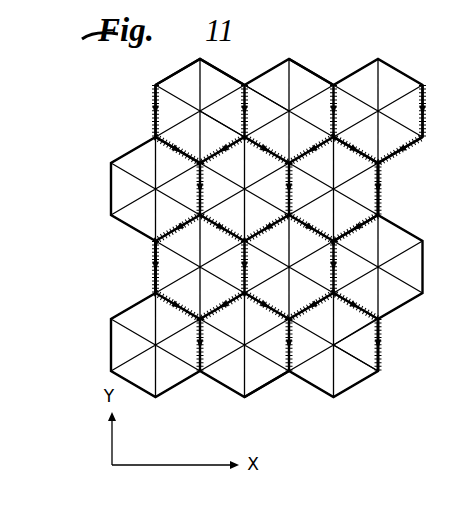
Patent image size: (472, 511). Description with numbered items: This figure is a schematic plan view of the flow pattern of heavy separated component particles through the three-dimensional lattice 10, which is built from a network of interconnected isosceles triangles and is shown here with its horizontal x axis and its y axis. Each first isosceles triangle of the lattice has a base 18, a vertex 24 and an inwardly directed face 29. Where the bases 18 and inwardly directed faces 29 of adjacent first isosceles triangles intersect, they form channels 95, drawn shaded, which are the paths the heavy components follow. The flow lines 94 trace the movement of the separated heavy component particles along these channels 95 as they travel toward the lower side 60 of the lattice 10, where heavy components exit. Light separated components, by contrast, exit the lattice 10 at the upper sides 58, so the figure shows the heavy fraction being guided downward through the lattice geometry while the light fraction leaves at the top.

The three-dimensional lattice 10 is at (128, 97).
The base 18 is at (344, 130).
The vertex 24 is at (376, 209).
The inwardly directed face 29 is at (222, 108).
The upper sides 58 is at (309, 68).
The lower sides 60 is at (265, 389).
The flow lines 94 is at (168, 150).
The channels 95 is at (153, 281).